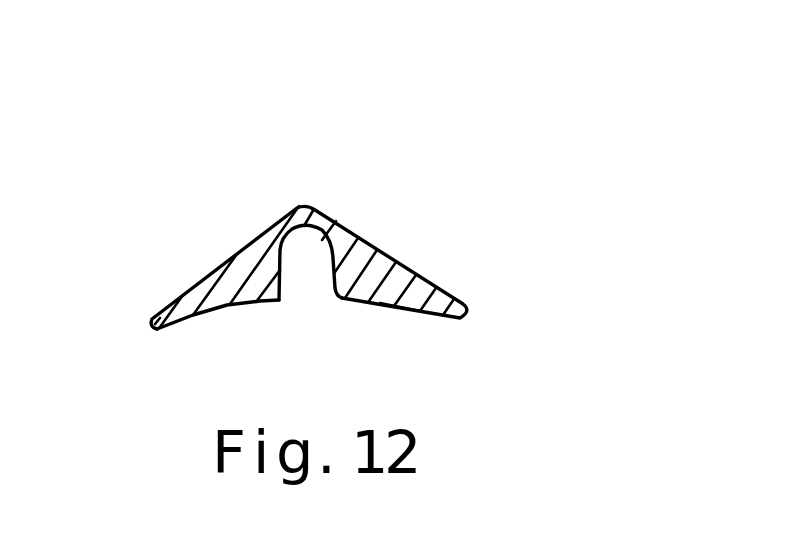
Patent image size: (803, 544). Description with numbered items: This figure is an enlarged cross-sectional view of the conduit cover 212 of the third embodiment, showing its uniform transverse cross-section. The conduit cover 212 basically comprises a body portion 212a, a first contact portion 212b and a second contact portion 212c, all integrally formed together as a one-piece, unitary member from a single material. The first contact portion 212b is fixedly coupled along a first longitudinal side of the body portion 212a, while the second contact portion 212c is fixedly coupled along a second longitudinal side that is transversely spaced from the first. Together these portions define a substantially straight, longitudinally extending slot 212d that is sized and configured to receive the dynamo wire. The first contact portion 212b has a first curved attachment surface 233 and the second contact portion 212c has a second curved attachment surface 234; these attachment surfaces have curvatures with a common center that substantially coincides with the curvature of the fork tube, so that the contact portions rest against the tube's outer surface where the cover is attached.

The conduit cover 212 is at (404, 229).
The body portion 212a is at (314, 206).
The first contact portion 212b is at (198, 292).
The second contact portion 212c is at (418, 286).
The longitudinally extending slot 212d is at (317, 296).
The first curved attachment surface 233 is at (197, 314).
The second curved attachment surface 234 is at (392, 305).